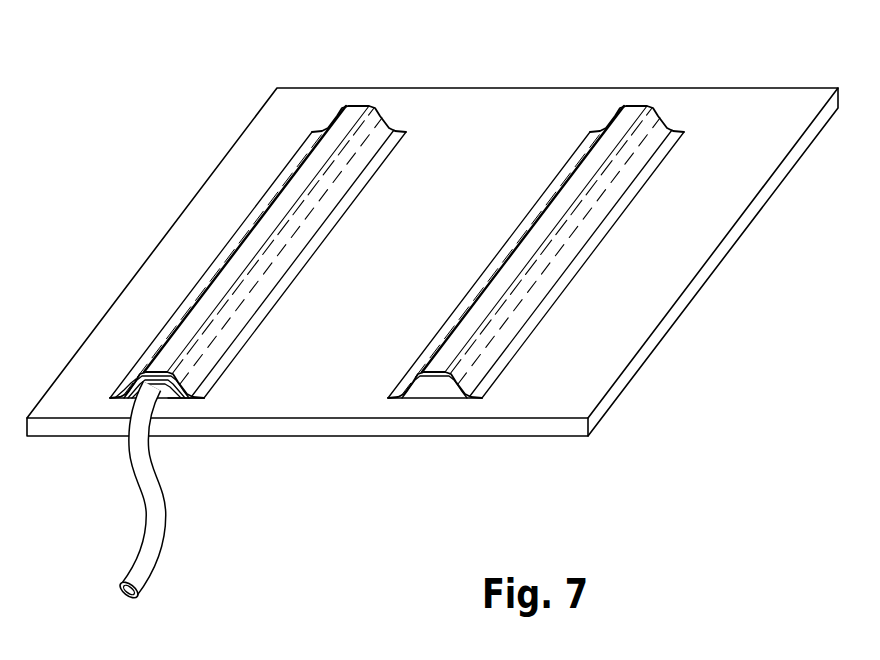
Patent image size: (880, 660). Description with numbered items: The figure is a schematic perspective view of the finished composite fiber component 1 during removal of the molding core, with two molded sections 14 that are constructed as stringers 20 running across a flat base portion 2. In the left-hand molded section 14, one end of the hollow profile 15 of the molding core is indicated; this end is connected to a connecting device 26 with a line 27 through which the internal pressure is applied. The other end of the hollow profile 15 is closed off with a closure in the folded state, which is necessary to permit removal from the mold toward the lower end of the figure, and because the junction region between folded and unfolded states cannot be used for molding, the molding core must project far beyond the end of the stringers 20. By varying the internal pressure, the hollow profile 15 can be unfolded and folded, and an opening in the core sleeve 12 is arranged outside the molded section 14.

The composite fiber component 1 is at (429, 313).
The base plate 2 is at (590, 362).
The core sleeve 12 is at (161, 390).
The molded section 14 is at (260, 227).
The hollow profile 15 is at (168, 398).
The stringer 20 is at (350, 112).
The connecting device 26 is at (128, 372).
The line 27 is at (143, 560).